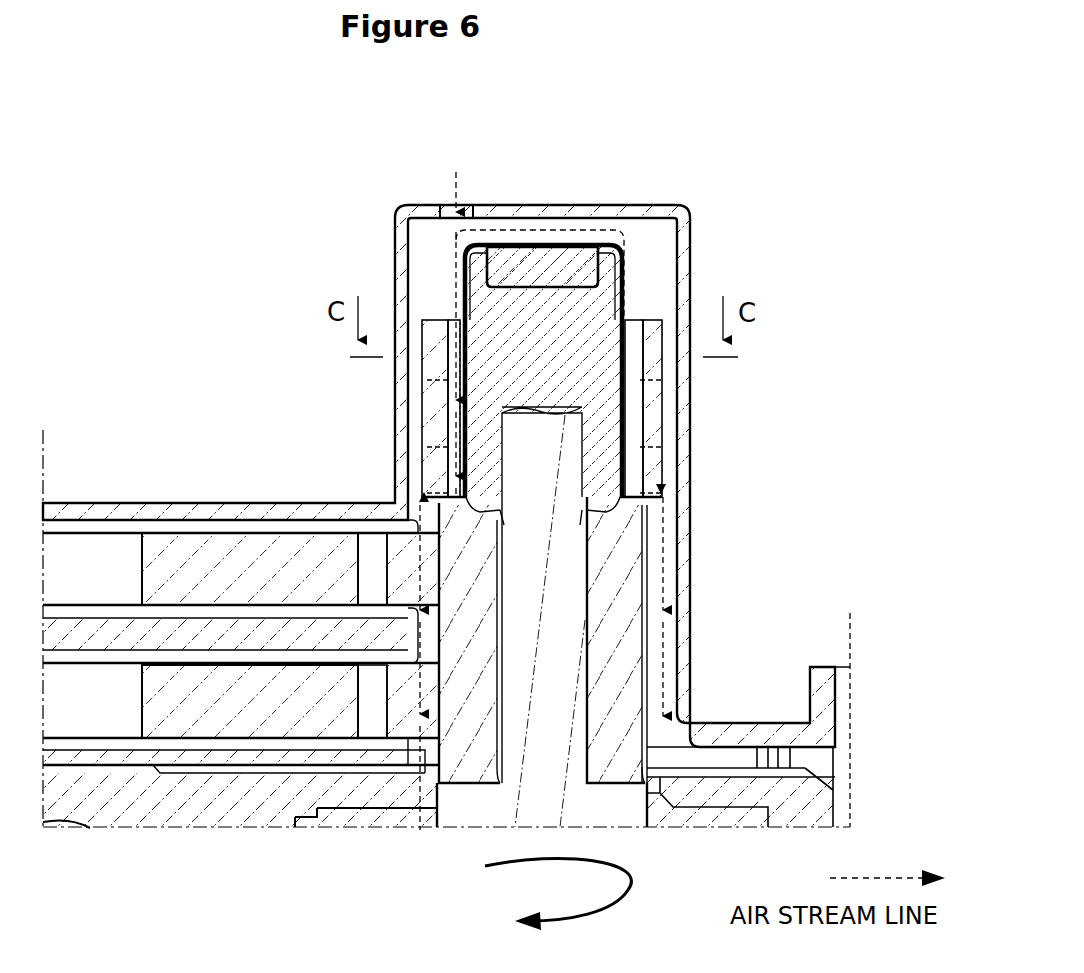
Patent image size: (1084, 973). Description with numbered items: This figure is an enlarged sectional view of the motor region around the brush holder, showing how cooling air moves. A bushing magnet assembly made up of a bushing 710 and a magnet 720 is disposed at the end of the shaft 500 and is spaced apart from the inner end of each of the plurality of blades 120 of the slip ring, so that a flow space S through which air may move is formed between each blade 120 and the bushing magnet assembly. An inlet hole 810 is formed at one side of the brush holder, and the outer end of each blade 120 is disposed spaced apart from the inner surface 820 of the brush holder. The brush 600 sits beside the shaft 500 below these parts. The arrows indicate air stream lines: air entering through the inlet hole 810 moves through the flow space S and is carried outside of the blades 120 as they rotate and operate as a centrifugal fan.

The inlet hole 810 is at (450, 203).
The bushing 710 is at (517, 337).
The magnet 720 is at (577, 268).
The blades 120 is at (433, 317).
The inner surface of the brush holder 820 is at (440, 473).
The flow space S is at (455, 408).
The brush 600 is at (173, 697).
The shaft 500 is at (560, 580).